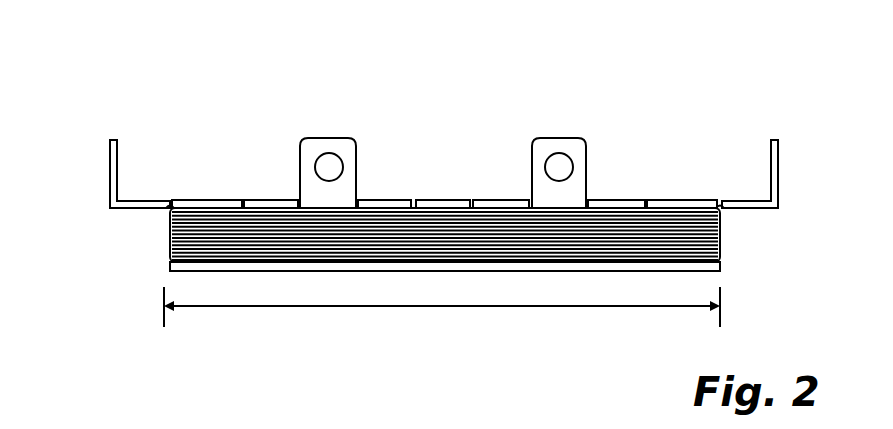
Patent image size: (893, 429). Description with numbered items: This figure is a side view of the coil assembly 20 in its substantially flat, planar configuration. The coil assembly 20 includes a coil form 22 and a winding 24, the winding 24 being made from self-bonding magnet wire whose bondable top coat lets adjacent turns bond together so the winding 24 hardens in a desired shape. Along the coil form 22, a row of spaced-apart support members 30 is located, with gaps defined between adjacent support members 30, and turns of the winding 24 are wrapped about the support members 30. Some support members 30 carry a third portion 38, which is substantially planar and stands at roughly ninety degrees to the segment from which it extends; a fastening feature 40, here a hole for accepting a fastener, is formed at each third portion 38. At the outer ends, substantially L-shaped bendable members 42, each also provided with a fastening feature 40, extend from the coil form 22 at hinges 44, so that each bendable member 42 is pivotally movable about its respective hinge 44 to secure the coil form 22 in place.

The coil assembly 20 is at (669, 88).
The coil form 22 is at (166, 268).
The winding 24 is at (172, 229).
The support members 30 is at (398, 197).
The third portion 38 is at (344, 150).
The fastening feature 40 is at (329, 152).
The bendable members 42 is at (113, 178).
The hinges 44 is at (171, 205).